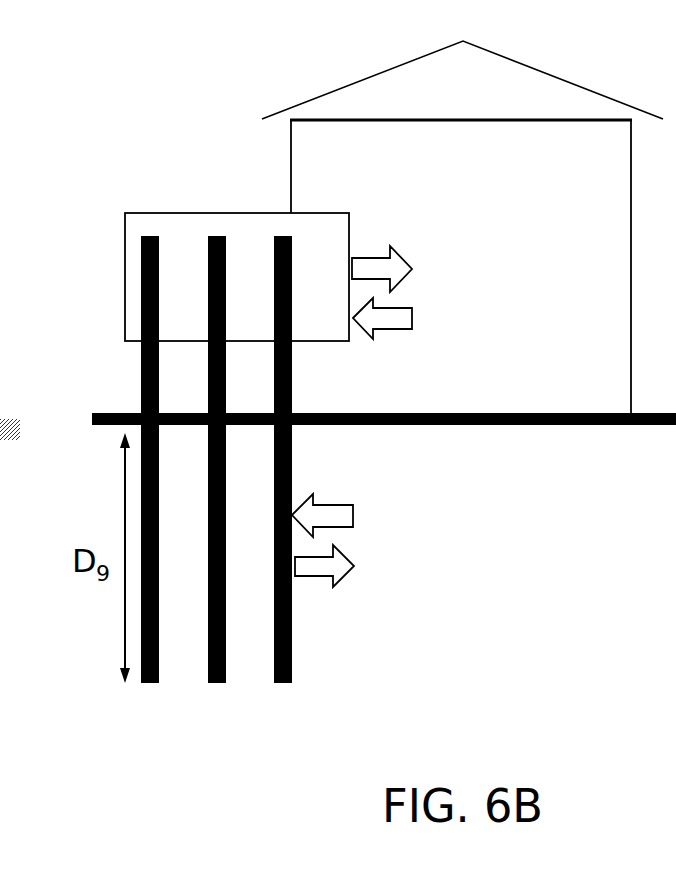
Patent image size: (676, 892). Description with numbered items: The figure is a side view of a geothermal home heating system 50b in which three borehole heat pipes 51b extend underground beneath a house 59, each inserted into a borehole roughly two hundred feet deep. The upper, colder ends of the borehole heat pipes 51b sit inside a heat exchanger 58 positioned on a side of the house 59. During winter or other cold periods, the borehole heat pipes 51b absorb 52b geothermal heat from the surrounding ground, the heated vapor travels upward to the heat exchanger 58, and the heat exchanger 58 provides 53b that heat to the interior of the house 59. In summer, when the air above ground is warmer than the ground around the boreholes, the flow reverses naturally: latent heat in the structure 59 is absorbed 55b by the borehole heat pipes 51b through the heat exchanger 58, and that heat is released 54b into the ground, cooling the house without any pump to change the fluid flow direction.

The house 59 is at (282, 182).
The heat exchanger 58 is at (125, 280).
The borehole heat pipes 51b is at (300, 680).
The geothermal home heating system 50b is at (89, 673).
The heat provided to the house 53b is at (409, 255).
The latent heat absorbed from the structure 55b is at (415, 321).
The geothermal heat absorbed 52b is at (347, 505).
The heat released into the ground 54b is at (352, 570).